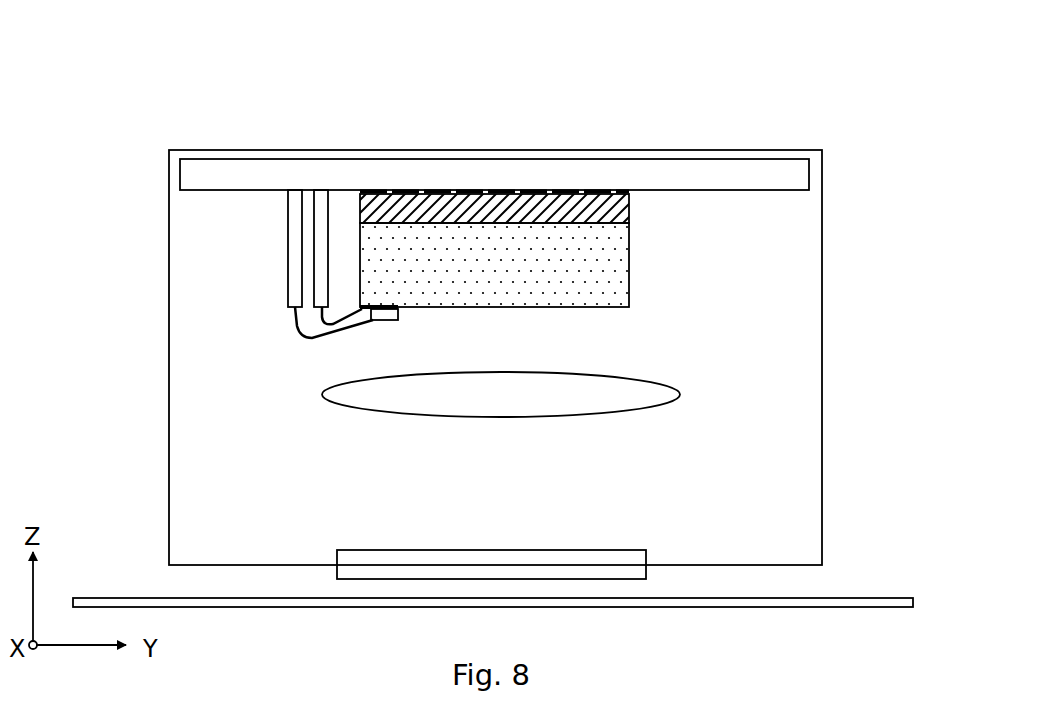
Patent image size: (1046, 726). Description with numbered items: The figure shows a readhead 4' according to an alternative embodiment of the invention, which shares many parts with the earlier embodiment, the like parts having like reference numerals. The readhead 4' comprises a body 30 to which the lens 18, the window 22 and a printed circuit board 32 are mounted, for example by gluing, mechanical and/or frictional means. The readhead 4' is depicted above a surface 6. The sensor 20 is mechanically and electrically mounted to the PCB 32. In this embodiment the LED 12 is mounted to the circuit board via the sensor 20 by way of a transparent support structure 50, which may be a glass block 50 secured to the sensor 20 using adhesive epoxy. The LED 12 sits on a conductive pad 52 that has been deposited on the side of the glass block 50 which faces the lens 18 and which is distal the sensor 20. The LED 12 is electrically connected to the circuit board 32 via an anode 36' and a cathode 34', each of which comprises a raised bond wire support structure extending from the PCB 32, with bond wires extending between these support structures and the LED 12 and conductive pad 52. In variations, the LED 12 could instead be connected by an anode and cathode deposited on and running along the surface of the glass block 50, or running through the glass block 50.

The readhead 4' is at (879, 42).
The mounting surface / plate 6 is at (803, 596).
The LED 12 is at (398, 315).
The lens 18 is at (658, 385).
The sensor 20 is at (613, 193).
The window 22 is at (353, 553).
The body 30 is at (168, 453).
The printed circuit board 32 is at (249, 180).
The cathode 34' is at (259, 248).
The anode 36' is at (246, 248).
The transparent support structure 50 is at (628, 264).
The conductive pad 52 is at (365, 305).